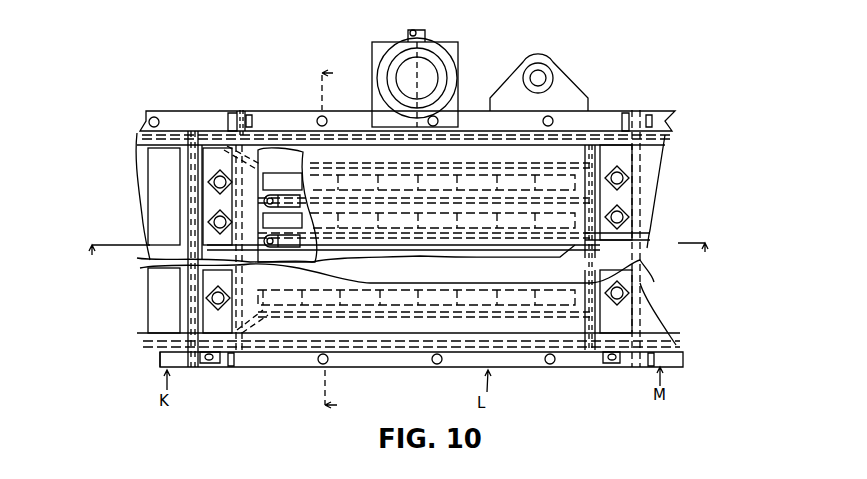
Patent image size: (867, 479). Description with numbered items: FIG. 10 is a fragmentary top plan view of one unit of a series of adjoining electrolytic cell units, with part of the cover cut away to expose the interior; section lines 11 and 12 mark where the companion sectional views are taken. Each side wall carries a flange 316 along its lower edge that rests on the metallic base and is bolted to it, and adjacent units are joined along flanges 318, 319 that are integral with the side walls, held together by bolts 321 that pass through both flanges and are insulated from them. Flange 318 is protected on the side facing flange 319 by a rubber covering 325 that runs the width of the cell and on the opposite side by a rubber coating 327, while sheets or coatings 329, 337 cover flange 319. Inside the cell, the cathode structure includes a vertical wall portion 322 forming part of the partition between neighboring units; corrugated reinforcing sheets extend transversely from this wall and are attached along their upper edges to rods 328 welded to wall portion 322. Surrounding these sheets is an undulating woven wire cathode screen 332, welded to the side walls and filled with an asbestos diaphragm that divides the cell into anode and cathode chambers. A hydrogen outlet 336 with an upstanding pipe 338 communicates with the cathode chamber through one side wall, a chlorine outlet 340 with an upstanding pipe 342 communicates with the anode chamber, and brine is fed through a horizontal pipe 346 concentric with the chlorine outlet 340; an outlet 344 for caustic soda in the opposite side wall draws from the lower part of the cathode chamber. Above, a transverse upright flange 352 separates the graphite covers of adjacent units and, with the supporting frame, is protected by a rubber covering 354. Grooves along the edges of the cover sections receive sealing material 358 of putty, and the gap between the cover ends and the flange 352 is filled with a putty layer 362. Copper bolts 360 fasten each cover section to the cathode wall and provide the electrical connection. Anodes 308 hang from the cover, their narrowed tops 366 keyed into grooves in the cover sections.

The section line 11- 11 is at (400, 263).
The section line 12- 12 is at (340, 241).
The anodes 308 is at (435, 223).
The flange 316 is at (255, 111).
The flange 318 is at (624, 110).
The flange 319 is at (640, 110).
The bolts 321 is at (667, 117).
The wall portion 322 is at (625, 318).
The rubber covering 325 is at (632, 157).
The coating 327 is at (230, 120).
The rods 328 is at (302, 243).
The sheets or coatings 329 is at (235, 114).
The cathode screen 332 is at (262, 245).
The hydrogen outlet 336 is at (583, 90).
The sheets or coatings 337 is at (241, 111).
The upstanding pipe 338 is at (552, 70).
The chlorine outlet 340 is at (458, 73).
The upstanding pipe 342 is at (443, 52).
The outlet for caustic soda 344 is at (212, 360).
The horizontal pipe 346 is at (422, 35).
The transverse upright flange 352 is at (645, 217).
The covering 354 is at (598, 204).
The sealing material 358 is at (473, 241).
The bolts 360 is at (627, 293).
The layer of putty 362 is at (581, 236).
The tops of anodes 366 is at (367, 223).